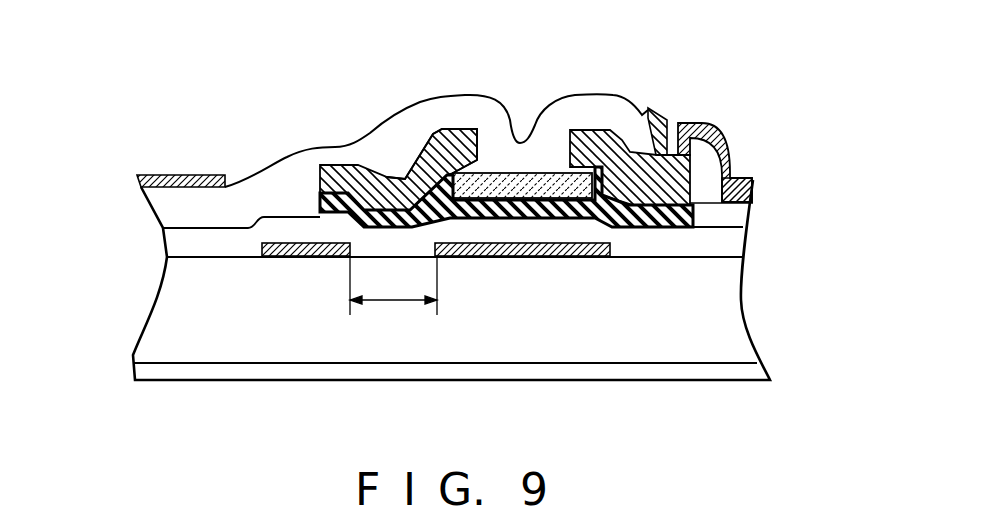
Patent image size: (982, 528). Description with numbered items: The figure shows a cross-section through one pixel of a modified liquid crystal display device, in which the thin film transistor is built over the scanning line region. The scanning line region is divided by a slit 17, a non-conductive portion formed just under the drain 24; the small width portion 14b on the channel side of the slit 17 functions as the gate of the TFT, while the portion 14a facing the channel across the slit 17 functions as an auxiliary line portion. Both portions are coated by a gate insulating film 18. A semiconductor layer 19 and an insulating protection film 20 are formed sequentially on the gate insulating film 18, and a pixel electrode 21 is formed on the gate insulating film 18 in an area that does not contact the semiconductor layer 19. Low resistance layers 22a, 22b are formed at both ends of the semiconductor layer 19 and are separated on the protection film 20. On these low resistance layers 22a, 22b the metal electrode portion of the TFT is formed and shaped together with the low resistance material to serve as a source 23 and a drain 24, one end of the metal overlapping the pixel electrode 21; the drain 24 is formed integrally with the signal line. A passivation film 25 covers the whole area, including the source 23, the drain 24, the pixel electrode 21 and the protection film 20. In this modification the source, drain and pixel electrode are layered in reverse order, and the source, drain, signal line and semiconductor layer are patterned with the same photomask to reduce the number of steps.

The auxiliary line portion 14a is at (313, 258).
The channel side portion 14b is at (605, 255).
The slit 17 is at (393, 298).
The gate insulating film 18 is at (738, 243).
The semiconductor layer 19 is at (503, 212).
The insulating protection film 20 is at (560, 195).
The pixel electrode 21 is at (138, 180).
The low resistance layer 22a is at (400, 172).
The low resistance layer 22b is at (652, 122).
The source 23 is at (330, 177).
The drain 24 is at (616, 150).
The passivation film 25 is at (592, 107).